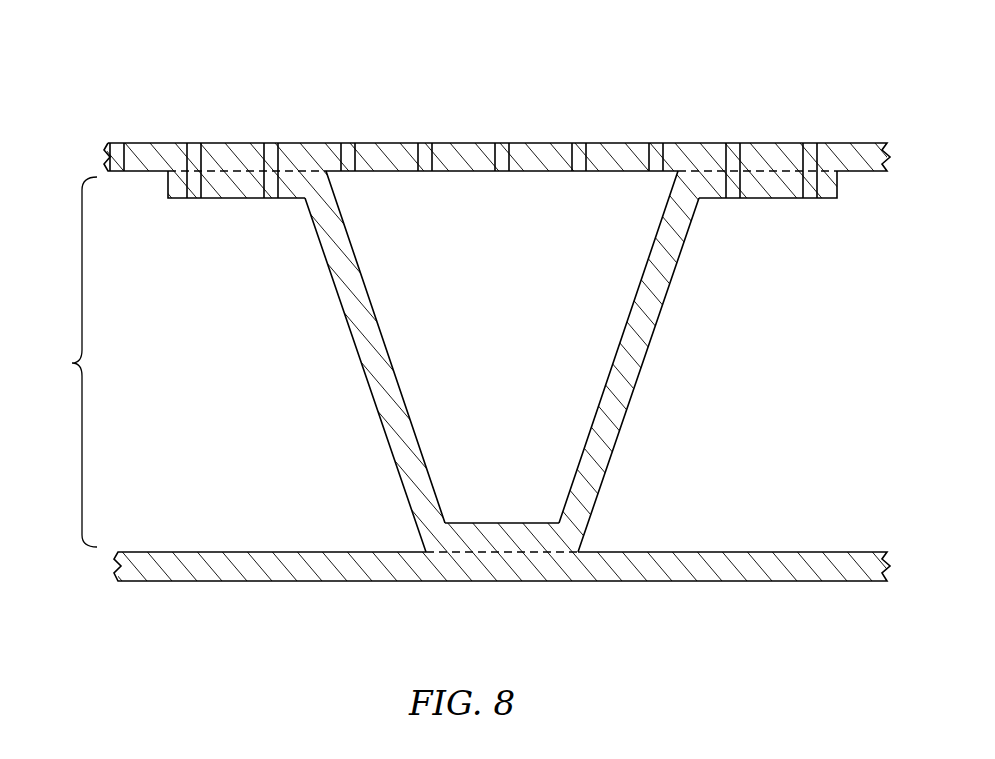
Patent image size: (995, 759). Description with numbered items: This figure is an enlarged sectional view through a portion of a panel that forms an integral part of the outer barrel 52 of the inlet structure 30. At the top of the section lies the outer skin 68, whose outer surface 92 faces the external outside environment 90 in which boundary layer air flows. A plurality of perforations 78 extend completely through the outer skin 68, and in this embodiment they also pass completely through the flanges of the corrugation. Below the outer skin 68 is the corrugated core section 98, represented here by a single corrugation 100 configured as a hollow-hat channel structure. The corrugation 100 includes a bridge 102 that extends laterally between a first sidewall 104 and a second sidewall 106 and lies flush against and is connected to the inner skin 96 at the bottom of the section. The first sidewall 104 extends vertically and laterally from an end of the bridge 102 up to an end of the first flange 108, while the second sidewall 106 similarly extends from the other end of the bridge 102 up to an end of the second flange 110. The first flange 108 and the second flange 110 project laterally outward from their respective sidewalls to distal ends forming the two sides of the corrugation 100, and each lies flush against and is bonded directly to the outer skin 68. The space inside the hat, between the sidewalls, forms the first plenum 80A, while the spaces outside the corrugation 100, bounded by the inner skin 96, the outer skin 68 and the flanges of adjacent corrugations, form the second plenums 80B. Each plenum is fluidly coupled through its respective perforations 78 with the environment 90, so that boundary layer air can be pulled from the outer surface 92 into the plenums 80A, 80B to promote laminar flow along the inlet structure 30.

The outer barrel 52 is at (469, 149).
The inlet structure 30 is at (608, 85).
The outer skin 68 is at (98, 158).
The perforations 78 is at (120, 143).
The outer surface 92 is at (232, 143).
The external outside environment 90 is at (470, 58).
The corrugated core section 98 is at (64, 362).
The first flange 108 is at (225, 199).
The second flange 110 is at (766, 199).
The corrugation 100 is at (632, 441).
The first sidewall 104 is at (368, 294).
The second sidewall 106 is at (622, 355).
The bridge 102 is at (503, 523).
The first plenum 80A is at (547, 312).
The second plenum 80B is at (248, 387).
The inner skin 96 is at (151, 590).